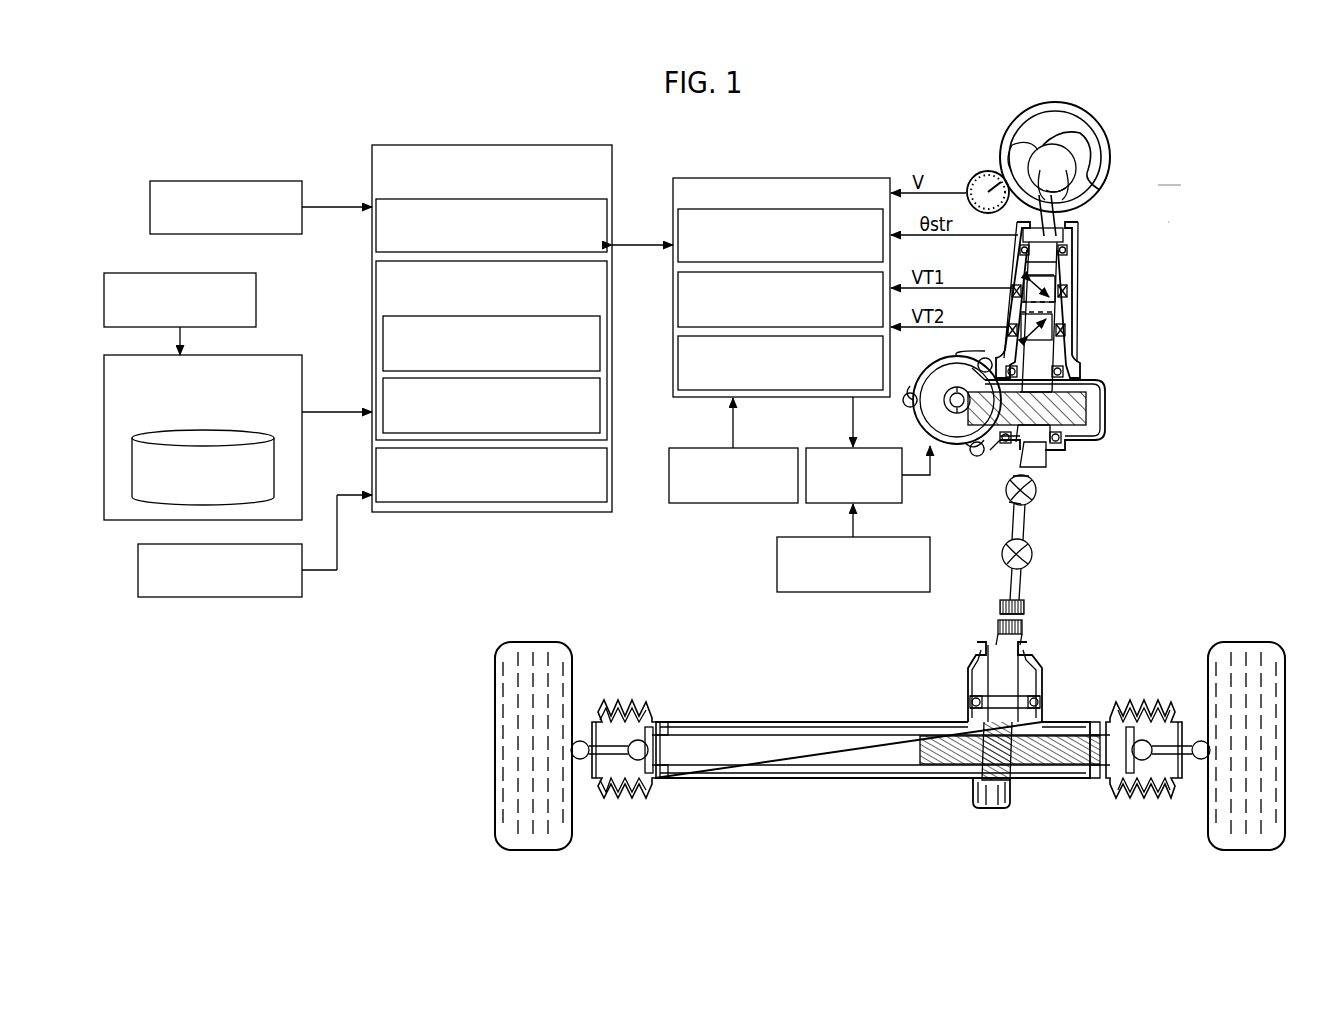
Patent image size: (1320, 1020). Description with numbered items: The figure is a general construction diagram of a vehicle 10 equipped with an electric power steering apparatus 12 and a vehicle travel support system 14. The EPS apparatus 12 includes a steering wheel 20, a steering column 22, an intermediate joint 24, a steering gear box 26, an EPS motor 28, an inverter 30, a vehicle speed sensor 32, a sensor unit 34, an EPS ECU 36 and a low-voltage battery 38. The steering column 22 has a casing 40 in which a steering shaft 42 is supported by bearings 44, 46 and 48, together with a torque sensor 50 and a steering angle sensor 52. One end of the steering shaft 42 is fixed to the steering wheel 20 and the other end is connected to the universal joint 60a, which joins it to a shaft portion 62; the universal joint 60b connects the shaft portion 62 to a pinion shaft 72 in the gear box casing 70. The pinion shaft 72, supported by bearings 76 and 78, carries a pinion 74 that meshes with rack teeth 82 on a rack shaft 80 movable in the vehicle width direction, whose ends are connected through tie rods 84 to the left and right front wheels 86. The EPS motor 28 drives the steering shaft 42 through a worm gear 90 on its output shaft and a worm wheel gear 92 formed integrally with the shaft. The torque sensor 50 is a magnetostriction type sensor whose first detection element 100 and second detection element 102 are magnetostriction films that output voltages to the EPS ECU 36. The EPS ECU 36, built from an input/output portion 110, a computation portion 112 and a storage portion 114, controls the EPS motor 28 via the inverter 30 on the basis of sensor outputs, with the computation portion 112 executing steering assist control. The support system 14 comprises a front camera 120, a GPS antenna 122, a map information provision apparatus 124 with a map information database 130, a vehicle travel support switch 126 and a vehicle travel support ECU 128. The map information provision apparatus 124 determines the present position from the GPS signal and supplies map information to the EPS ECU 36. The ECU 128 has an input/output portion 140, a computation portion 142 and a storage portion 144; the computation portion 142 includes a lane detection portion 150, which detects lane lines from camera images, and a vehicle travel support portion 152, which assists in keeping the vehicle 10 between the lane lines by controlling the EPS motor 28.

The vehicle 10 is at (1181, 185).
The electric power steering apparatus 12 is at (1168, 222).
The vehicle travel support system 14 is at (122, 556).
The steering wheel 20 is at (1010, 139).
The steering column 22 is at (1082, 263).
The intermediate joint 24 is at (1107, 524).
The steering gear box 26 is at (735, 781).
The motor 28 is at (949, 445).
The inverter 30 is at (878, 457).
The vehicle speed sensor 32 is at (974, 178).
The sensor unit 34 is at (718, 504).
The electric power steering electronic control unit 36 is at (691, 181).
The low-voltage battery 38 is at (898, 593).
The casing 40 is at (1100, 439).
The steering shaft 42 is at (1046, 349).
The bearing 44 is at (1018, 250).
The bearing 46 is at (1070, 372).
The bearing 48 is at (1064, 441).
The torque sensor 50 is at (1140, 290).
The steering angle sensor 52 is at (1072, 236).
The universal joint 60a is at (1032, 493).
The universal joint 60b is at (1032, 552).
The shaft portion 62 is at (1026, 521).
The casing 70 is at (855, 780).
The pinion shaft 72 is at (1022, 626).
The pinion 74 is at (995, 806).
The bearing 76 is at (962, 703).
The bearing 78 is at (975, 796).
The rack shaft 80 is at (803, 760).
The rack teeth 82 is at (1042, 762).
The tie rods 84 is at (625, 752).
The front wheels 86 is at (505, 673).
The worm gear 90 is at (957, 420).
The worm wheel gear 92 is at (1086, 412).
The first detection element 100 is at (1068, 290).
The second detection element 102 is at (1066, 330).
The input/output portion 110 is at (685, 221).
The computation portion 112 is at (685, 284).
The storage portion 114 is at (685, 346).
The front camera 120 is at (268, 181).
The GPS antenna 122 is at (125, 273).
The map information provision apparatus 124 is at (275, 355).
The vehicle travel support switch 126 is at (260, 597).
The vehicle travel support electronic control unit 128 is at (388, 152).
The map information database 130 is at (168, 435).
The input/output portion 140 is at (382, 228).
The computation portion 142 is at (382, 268).
The storage portion 144 is at (382, 462).
The lane detection portion 150 is at (388, 345).
The vehicle travel support portion 152 is at (388, 391).